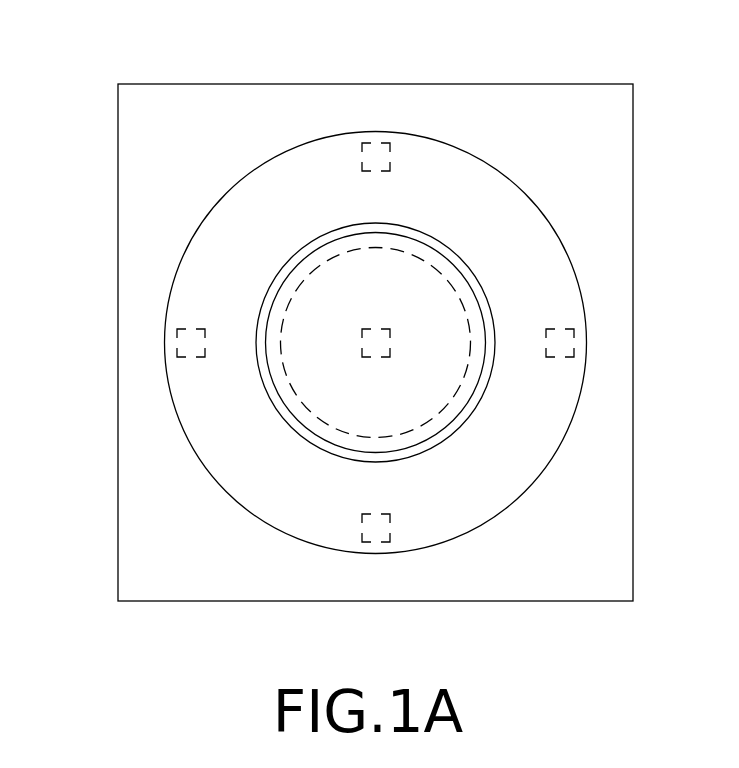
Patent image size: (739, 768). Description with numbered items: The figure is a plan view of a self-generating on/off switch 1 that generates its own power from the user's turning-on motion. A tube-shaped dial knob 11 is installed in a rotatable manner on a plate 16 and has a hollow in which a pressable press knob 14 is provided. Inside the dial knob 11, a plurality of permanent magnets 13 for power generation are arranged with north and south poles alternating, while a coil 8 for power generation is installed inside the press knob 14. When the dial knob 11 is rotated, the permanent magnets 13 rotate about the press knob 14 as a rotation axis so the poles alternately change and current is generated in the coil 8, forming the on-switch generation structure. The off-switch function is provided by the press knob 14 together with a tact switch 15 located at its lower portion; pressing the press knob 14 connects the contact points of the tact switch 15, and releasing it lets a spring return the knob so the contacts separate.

The self-generating on/off switch 1 is at (594, 54).
The coil 8 is at (407, 252).
The dial knob 11 is at (305, 165).
The permanent magnets 13 is at (377, 142).
The press knob 14 is at (437, 252).
The tact switch 15 is at (375, 340).
The plate 16 is at (145, 177).